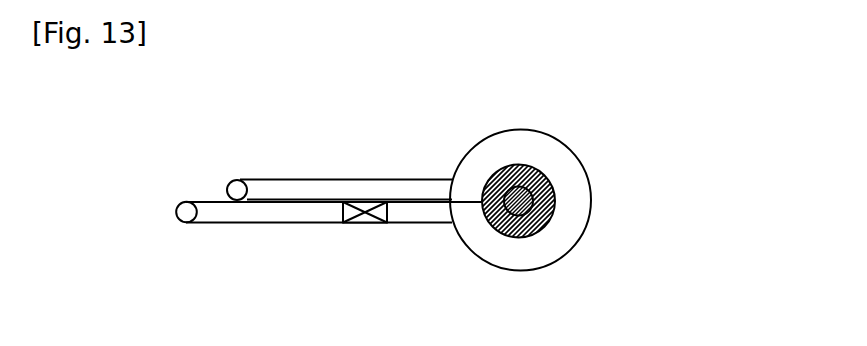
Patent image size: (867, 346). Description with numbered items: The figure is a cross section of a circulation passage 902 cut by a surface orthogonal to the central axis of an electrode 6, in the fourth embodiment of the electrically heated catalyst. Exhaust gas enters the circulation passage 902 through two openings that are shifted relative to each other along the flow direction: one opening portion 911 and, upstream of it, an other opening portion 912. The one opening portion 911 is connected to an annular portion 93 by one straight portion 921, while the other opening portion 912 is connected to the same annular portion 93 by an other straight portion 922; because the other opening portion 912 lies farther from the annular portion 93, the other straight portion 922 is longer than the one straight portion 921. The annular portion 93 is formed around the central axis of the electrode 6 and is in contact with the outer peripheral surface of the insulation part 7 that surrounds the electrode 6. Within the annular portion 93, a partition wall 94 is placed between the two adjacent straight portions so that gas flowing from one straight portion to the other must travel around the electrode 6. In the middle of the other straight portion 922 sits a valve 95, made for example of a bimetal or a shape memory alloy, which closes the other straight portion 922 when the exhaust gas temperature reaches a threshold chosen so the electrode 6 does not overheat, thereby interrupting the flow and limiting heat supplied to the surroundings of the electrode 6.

The electrode 6 is at (540, 177).
The insulation part 7 is at (584, 226).
The annular portion 93 is at (475, 158).
The partition wall 94 is at (465, 203).
The valve 95 is at (368, 218).
The circulation passage 902 is at (357, 179).
The one opening portion 911 is at (233, 180).
The other opening portion 912 is at (183, 215).
The one straight portion 921 is at (306, 188).
The other straight portion 922 is at (313, 208).